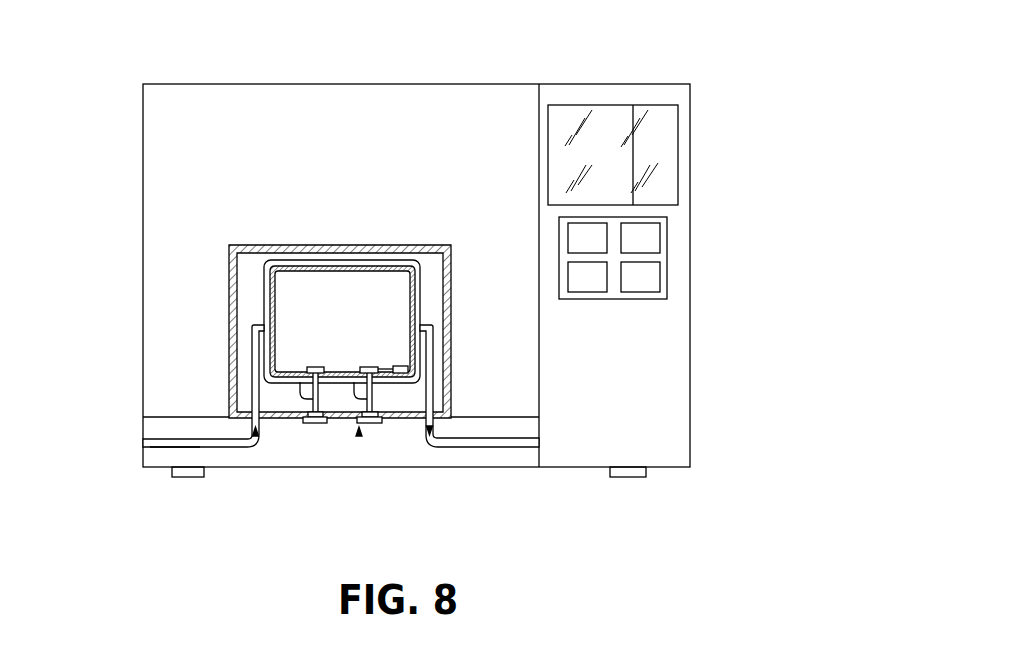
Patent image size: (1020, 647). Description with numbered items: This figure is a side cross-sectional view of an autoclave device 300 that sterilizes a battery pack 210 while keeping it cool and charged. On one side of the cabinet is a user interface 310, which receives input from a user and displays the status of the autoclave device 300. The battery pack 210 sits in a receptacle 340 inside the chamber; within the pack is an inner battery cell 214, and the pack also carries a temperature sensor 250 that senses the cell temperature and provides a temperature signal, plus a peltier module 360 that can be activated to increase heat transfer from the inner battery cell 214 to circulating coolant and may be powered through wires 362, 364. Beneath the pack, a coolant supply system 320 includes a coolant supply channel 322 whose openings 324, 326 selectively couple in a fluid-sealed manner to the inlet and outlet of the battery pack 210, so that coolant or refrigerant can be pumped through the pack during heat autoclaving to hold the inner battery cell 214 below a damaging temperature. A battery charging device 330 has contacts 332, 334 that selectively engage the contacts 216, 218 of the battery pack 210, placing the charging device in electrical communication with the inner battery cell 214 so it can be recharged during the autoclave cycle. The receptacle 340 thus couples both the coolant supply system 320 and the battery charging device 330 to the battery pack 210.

The autoclave device 300 is at (149, 54).
The user interface 310 is at (700, 128).
The battery pack 210 is at (262, 240).
The inner battery cell 214 is at (336, 280).
The peltier module 360 is at (265, 297).
The temperature sensor 250 is at (400, 365).
The contact 218 is at (320, 402).
The contact 216 is at (373, 403).
The wire 362 is at (300, 392).
The wire 364 is at (355, 385).
The coolant supply system 320 is at (230, 460).
The coolant supply channel 322 is at (175, 456).
The opening 326 is at (256, 438).
The opening 324 is at (431, 445).
The receptacle 340 is at (500, 428).
The contact 334 is at (315, 424).
The contact 332 is at (369, 424).
The battery charging device 330 is at (359, 436).